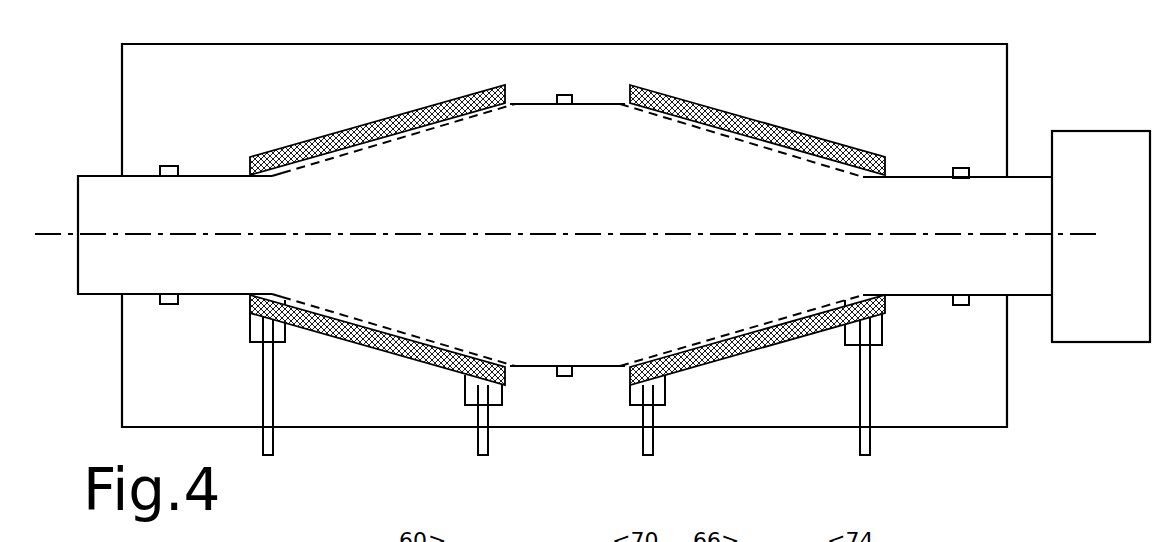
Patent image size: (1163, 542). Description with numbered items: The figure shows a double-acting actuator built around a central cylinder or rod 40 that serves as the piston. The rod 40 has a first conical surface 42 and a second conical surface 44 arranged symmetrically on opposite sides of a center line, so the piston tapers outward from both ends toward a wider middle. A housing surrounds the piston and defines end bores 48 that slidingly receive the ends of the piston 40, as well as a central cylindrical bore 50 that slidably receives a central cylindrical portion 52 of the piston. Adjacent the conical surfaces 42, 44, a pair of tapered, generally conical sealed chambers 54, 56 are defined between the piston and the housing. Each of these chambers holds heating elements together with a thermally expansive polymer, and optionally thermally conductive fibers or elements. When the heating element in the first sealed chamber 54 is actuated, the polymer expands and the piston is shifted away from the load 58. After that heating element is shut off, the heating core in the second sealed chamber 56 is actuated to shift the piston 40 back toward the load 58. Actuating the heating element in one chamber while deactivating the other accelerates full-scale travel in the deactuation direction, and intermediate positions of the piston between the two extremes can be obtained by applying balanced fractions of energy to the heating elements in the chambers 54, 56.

The central cylinder or rod 40 is at (580, 216).
The first conical surface 42 is at (838, 162).
The second conical surface 44 is at (328, 140).
The end bores 48 is at (200, 291).
The central cylindrical bore 50 is at (542, 366).
The central cylindrical portion 52 is at (588, 366).
The first sealed chamber 54 is at (725, 117).
The second sealed chamber 56 is at (403, 118).
The load 58 is at (1120, 131).